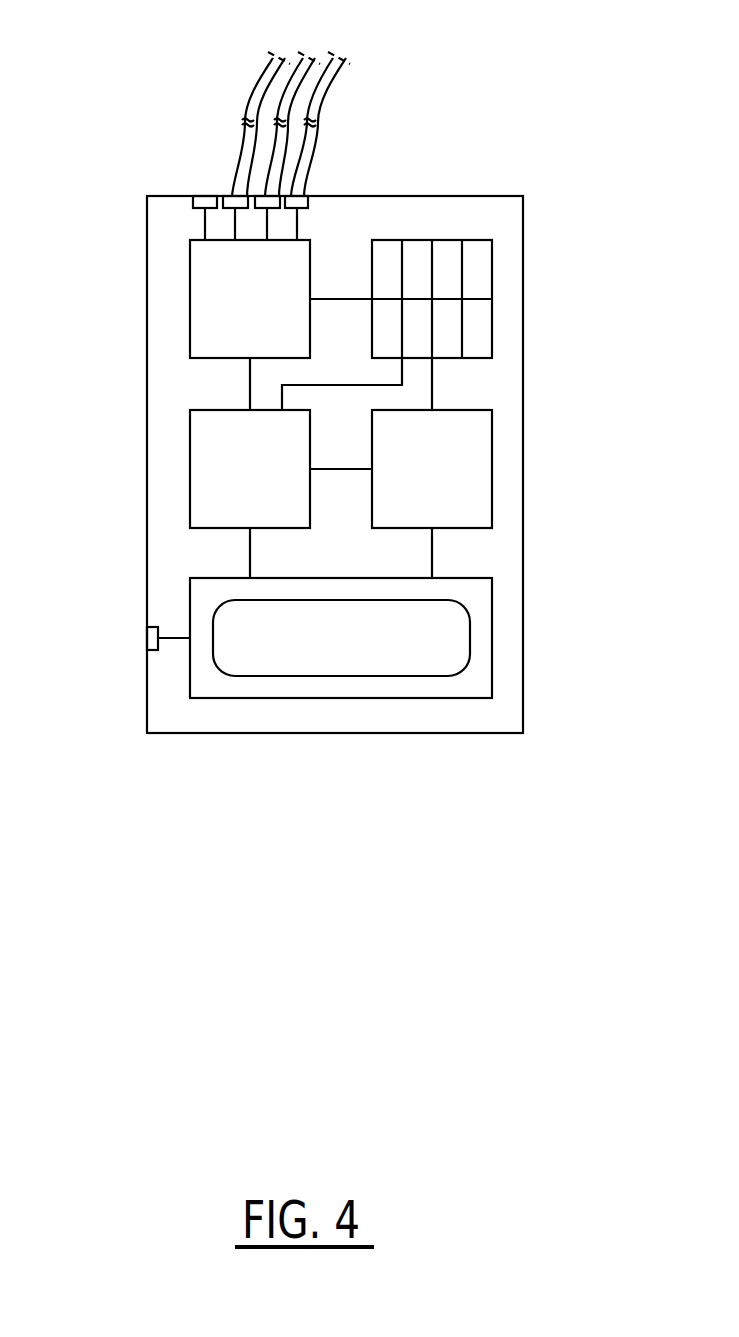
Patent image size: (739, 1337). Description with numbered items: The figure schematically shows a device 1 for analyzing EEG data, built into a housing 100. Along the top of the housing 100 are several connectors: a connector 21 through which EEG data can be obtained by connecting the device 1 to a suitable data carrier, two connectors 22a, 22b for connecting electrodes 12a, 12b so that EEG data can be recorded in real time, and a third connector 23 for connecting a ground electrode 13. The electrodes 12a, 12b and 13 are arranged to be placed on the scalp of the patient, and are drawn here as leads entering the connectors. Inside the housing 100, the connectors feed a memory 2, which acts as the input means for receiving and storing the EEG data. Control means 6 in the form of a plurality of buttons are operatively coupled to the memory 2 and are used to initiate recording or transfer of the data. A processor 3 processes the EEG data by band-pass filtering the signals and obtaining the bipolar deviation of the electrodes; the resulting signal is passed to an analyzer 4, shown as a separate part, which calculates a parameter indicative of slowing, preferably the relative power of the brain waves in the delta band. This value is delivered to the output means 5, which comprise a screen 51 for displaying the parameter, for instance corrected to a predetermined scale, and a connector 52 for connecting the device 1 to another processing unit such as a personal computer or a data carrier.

The device 1 is at (390, 548).
The housing 100 is at (505, 670).
The memory 2 is at (250, 299).
The processor 3 is at (250, 469).
The analyzer 4 is at (432, 469).
The output means 5 is at (455, 585).
The screen 51 is at (377, 667).
The connector 52 is at (143, 635).
The control means 6 is at (443, 350).
The connector 21 is at (203, 197).
The connector 22a is at (232, 197).
The connector 22b is at (273, 197).
The third connector 23 is at (305, 198).
The electrode 12a is at (293, 53).
The electrode 12b is at (313, 49).
The ground electrode 13 is at (343, 57).